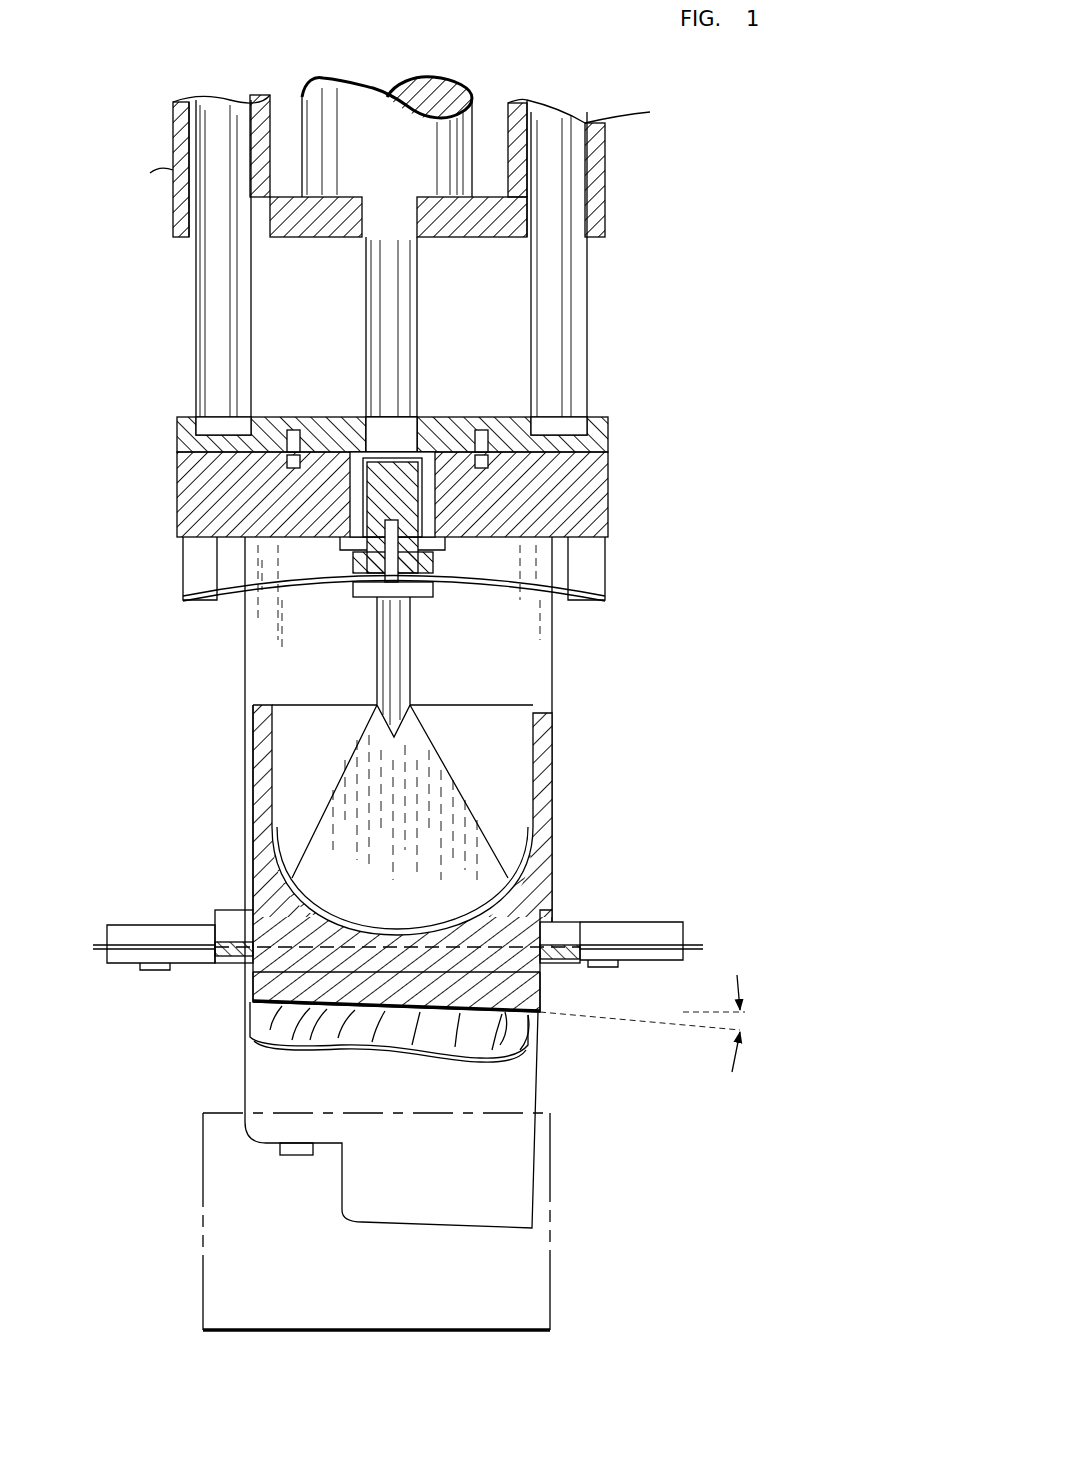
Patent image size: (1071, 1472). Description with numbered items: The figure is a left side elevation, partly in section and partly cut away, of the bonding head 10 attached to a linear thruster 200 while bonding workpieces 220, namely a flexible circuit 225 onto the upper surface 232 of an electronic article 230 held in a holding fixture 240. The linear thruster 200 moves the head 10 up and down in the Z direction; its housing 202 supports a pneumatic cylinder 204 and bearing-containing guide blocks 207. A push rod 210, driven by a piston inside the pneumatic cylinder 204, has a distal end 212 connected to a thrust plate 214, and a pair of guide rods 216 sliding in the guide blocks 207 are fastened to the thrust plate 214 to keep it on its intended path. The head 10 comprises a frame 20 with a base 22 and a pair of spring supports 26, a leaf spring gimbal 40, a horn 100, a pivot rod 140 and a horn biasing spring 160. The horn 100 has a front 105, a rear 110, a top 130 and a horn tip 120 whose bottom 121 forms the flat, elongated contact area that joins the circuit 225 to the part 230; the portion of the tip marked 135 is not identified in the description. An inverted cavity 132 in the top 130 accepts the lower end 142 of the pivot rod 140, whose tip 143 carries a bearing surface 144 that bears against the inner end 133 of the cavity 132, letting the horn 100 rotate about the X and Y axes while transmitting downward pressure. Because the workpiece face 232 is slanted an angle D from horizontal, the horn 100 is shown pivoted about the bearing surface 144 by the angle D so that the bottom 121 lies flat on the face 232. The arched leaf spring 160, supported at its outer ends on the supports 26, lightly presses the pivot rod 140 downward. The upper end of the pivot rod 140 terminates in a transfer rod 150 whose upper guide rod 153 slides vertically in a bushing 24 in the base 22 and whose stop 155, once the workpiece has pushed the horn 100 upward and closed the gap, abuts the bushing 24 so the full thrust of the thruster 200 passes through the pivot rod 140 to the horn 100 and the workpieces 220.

The head 10 is at (763, 450).
The frame 20 is at (158, 507).
The base 22 is at (177, 487).
The bushing 24 is at (442, 545).
The spring supports 26 is at (192, 580).
The leaf spring gimbal 40 is at (215, 918).
The horn 100 is at (590, 782).
The front 105 is at (563, 832).
The rear 110 is at (222, 810).
The horn tip 120 is at (540, 975).
The bottom 121 is at (540, 1002).
The top 130 is at (583, 722).
The inverted cavity 132 is at (316, 702).
The inner end 133 is at (255, 888).
The lower portion 135 is at (253, 985).
The pivot rod 140 is at (412, 662).
The lower end 142 is at (440, 790).
The tip 143 is at (452, 915).
The bearing surface 144 is at (338, 912).
The transfer rod 150 is at (427, 565).
The upper guide rod 153 is at (368, 548).
The stop 155 is at (352, 590).
The horn biasing spring 160 is at (256, 615).
The linear thruster 200 is at (763, 78).
The housing 202 is at (490, 232).
The pneumatic cylinder 204 is at (462, 80).
The guide blocks 207 is at (170, 170).
The push rod 210 is at (393, 315).
The distal end 212 is at (392, 425).
The thrust plate 214 is at (177, 425).
The guide rods 216 is at (245, 337).
The workpieces 220 is at (763, 1247).
The flexible circuit 225 is at (258, 1022).
The electronic article 230 is at (485, 1075).
The upper surface 232 is at (512, 1030).
The holding fixture 240 is at (203, 1195).
The angle D is at (656, 1023).